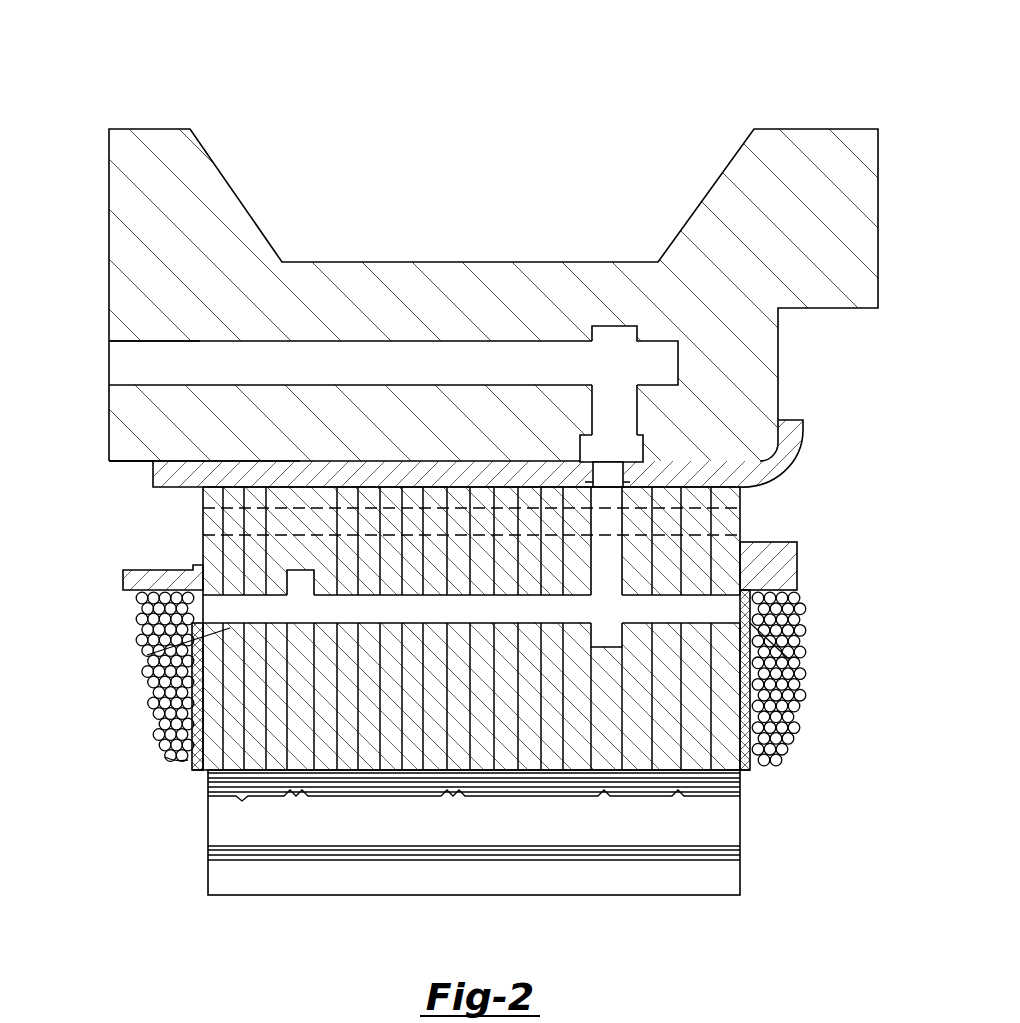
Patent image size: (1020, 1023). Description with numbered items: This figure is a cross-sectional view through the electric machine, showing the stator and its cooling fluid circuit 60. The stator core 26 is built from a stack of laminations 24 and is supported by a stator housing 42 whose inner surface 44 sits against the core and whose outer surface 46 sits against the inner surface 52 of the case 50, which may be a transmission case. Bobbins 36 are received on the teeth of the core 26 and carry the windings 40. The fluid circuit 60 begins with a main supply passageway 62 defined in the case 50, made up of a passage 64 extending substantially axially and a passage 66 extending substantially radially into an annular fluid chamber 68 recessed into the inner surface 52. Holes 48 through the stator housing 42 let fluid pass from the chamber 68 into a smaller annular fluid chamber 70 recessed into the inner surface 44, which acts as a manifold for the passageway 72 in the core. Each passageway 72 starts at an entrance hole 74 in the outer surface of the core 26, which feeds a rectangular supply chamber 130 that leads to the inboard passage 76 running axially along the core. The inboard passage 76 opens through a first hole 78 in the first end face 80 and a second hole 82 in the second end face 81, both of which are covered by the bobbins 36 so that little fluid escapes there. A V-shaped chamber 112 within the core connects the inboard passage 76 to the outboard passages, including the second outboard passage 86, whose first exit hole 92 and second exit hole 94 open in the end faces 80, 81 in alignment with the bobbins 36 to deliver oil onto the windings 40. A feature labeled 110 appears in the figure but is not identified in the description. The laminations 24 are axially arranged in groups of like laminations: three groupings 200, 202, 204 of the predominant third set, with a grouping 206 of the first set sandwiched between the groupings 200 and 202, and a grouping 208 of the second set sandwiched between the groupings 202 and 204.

The case 50 is at (815, 140).
The fluid circuit 60 is at (372, 332).
The main supply passageway 62 is at (426, 348).
The axially extending passage 64 is at (168, 340).
The outer surface 46 is at (190, 460).
The radially extending passage 66 is at (640, 413).
The annular fluid chamber 68 is at (630, 447).
The holes 48 is at (628, 475).
The entrance hole 74 is at (603, 486).
The inner surface 44 is at (150, 478).
The inner surface 52 is at (140, 468).
The stator housing 42 is at (800, 440).
The annular fluid chamber 70 is at (632, 481).
The second exit hole 94 is at (746, 527).
The stator core 26 is at (735, 737).
The second outboard passage 86 is at (236, 512).
The inboard passage 76 is at (235, 607).
The V-shaped chamber 112 is at (290, 592).
The supply chamber 130 is at (610, 598).
The first exit hole 92 is at (135, 570).
The side wall 110 is at (220, 660).
The bobbins 36 is at (792, 564).
The second end face 81 is at (776, 693).
The first hole 78 is at (146, 620).
The passageway 72 is at (147, 655).
The first end face 80 is at (165, 757).
The second hole 82 is at (772, 623).
The windings 40 is at (786, 678).
The laminations 24 is at (737, 760).
The grouping 200 is at (240, 814).
The grouping 206 is at (326, 811).
The grouping 202 is at (455, 811).
The grouping 208 is at (587, 811).
The grouping 204 is at (692, 811).